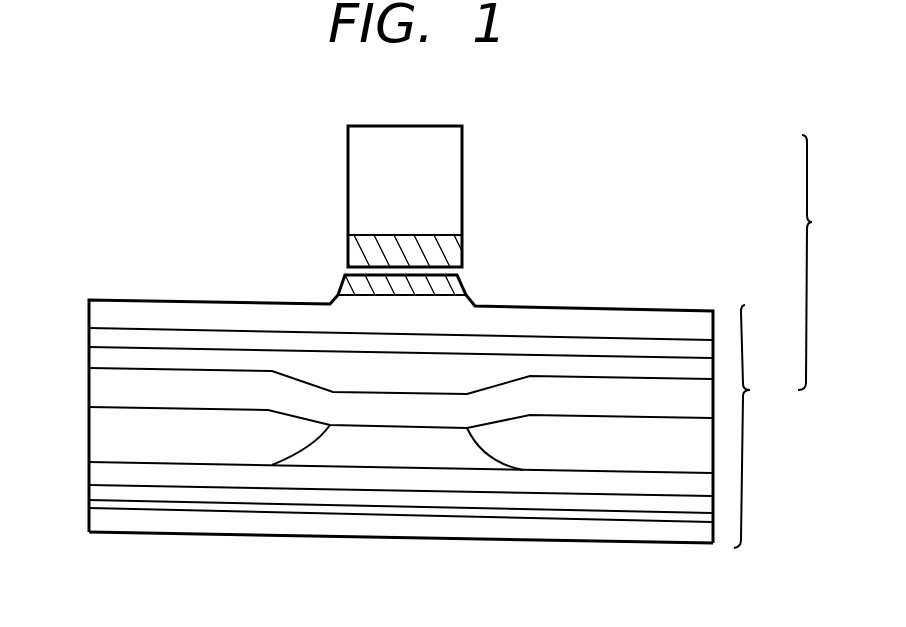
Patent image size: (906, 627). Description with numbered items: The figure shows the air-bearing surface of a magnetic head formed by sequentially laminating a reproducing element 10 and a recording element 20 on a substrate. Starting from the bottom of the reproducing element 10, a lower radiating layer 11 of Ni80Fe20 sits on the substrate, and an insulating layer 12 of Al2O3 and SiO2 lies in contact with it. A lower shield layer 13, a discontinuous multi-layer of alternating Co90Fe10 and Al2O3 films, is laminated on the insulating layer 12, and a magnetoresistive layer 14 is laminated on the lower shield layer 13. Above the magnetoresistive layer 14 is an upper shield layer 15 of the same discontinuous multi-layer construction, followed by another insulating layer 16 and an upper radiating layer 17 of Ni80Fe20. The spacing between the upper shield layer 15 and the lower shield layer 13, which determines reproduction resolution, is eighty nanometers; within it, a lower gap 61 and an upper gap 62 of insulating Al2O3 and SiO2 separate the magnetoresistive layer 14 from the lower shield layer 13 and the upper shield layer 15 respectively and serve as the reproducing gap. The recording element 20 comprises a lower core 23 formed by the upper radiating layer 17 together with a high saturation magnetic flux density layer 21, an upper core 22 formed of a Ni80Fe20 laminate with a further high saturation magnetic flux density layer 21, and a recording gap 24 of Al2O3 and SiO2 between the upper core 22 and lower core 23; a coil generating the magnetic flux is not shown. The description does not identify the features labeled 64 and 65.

The reproducing element 10 is at (433, 411).
The lower radiating layer 11 is at (625, 528).
The insulating layer 12 is at (557, 512).
The lower shield layer 13 is at (485, 500).
The magnetoresistive layer 14 is at (389, 455).
The upper shield layer 15 is at (244, 361).
The insulating layer 16 is at (186, 342).
The upper radiating layer 17 is at (131, 320).
The recording element 20 is at (821, 262).
The high saturation magnetic flux density layer 21 is at (440, 254).
The upper core 22 is at (475, 162).
The lower core 23 is at (625, 292).
The recording gap 24 is at (352, 268).
The lower gap 61 is at (275, 479).
The upper gap 62 is at (103, 386).
The bias underlayer 64 is at (103, 431).
The end region 65 is at (685, 458).